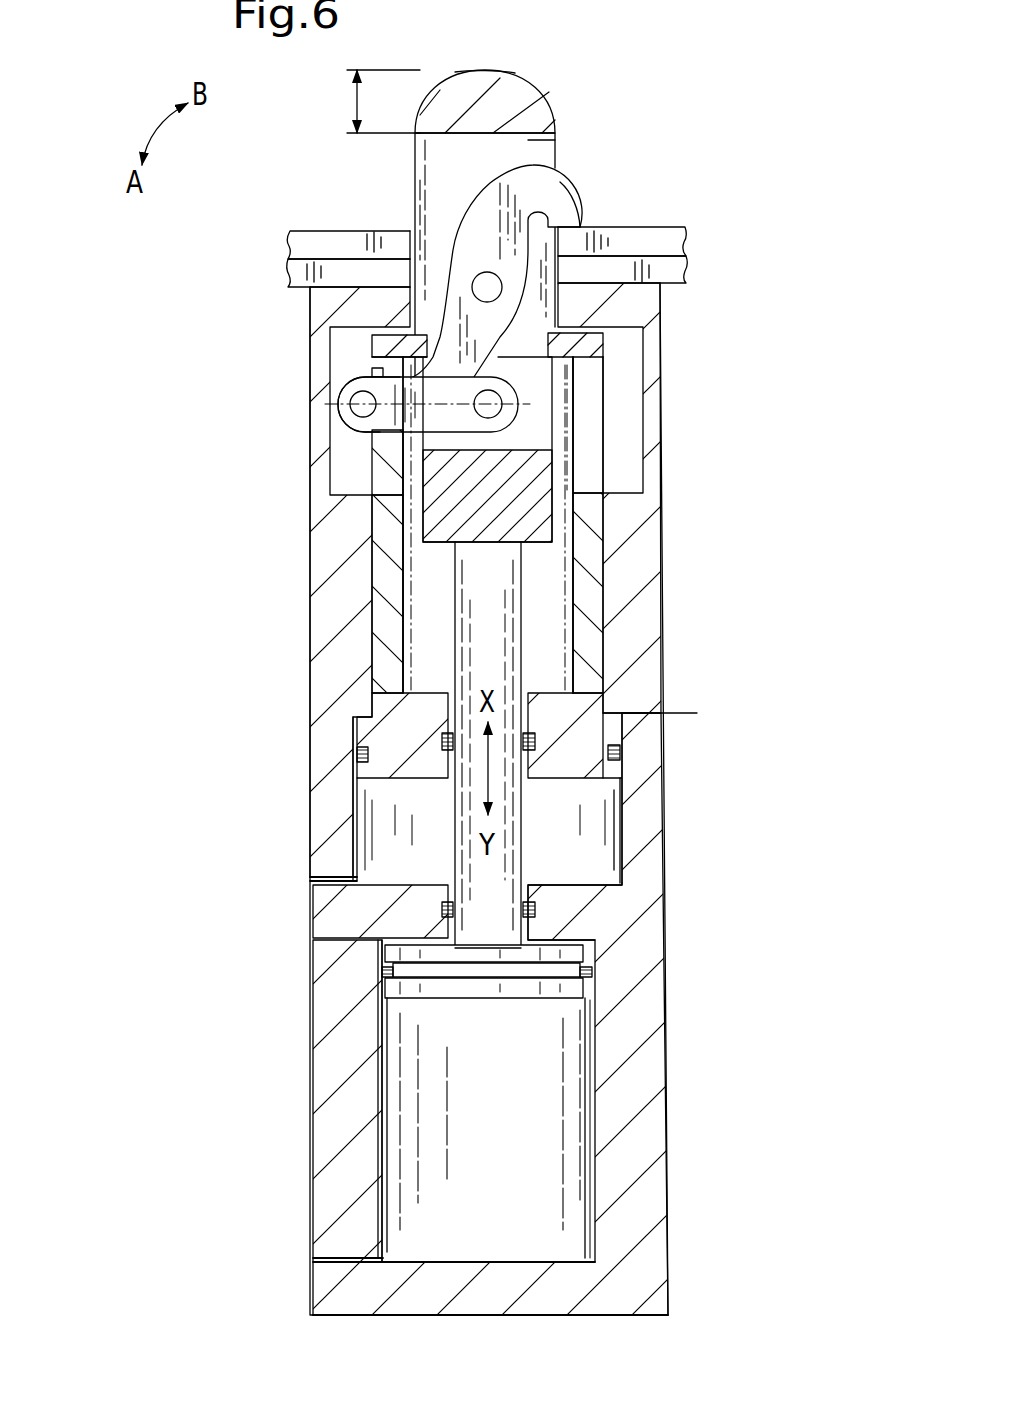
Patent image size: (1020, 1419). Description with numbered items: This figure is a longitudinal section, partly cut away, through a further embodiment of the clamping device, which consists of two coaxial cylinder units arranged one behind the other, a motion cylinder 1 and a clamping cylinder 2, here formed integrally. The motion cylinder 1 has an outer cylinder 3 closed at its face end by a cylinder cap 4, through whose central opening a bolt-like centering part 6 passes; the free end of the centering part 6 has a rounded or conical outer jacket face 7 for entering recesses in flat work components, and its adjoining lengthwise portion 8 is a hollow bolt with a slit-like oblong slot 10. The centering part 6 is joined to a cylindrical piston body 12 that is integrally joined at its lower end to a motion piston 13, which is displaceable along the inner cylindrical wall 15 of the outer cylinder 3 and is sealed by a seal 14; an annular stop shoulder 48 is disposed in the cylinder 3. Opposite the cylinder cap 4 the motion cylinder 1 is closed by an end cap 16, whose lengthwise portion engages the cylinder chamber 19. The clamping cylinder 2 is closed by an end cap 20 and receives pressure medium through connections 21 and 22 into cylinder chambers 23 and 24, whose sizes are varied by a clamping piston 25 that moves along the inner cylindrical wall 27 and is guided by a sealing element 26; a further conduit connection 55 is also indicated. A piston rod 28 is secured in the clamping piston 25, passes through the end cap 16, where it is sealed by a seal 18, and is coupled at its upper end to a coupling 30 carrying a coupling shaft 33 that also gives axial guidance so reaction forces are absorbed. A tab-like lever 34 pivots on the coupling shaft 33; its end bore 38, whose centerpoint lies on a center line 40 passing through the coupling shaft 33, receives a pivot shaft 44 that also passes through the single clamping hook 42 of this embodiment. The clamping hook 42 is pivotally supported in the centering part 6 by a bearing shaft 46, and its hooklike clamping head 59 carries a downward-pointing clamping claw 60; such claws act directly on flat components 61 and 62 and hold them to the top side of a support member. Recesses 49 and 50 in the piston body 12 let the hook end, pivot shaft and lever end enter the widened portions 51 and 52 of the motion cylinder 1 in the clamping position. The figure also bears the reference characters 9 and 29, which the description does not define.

The motion cylinder 1 is at (688, 620).
The clamping cylinder 2 is at (280, 1187).
The outer cylinder 3 is at (323, 630).
The cylinder cap 4 is at (638, 300).
The centering part 6 is at (543, 105).
The outer jacket face 7 is at (527, 82).
The lengthwise portion 8 is at (560, 140).
The stroke 9 is at (375, 101).
The oblong slot 10 is at (542, 153).
The piston body 12 is at (383, 667).
The motion piston 13 is at (602, 770).
The seal 14 is at (356, 754).
The inner cylindrical wall 15 is at (370, 828).
The end cap 16 is at (342, 915).
The seal 18 is at (555, 911).
The cylinder chamber 19 is at (585, 853).
The end cap 20 is at (642, 1290).
The conduit connection 21 is at (312, 945).
The conduit connection 22 is at (308, 1262).
The cylinder chamber 23 is at (570, 1112).
The cylinder chamber 24 is at (585, 942).
The clamping piston 25 is at (577, 988).
The sealing element 26 is at (377, 975).
The inner cylindrical wall 27 is at (585, 1160).
The piston rod 28 is at (510, 828).
The sealing ring 29 is at (357, 761).
The coupling 30 is at (540, 508).
The coupling shaft 33 is at (385, 522).
The tab-like lever 34 is at (350, 390).
The bore 38 is at (357, 420).
The center line 40 is at (368, 370).
The clamping hook 42 is at (542, 193).
The pivot shaft 44 is at (358, 410).
The bearing shaft 46 is at (480, 290).
The stop shoulder 48 is at (682, 713).
The recess 49 is at (382, 465).
The recess 50 is at (590, 455).
The widened portion 51 is at (348, 345).
The widened portion 52 is at (623, 345).
The conduit connection 55 is at (312, 883).
The clamping head 59 is at (568, 210).
The clamping claw 60 is at (612, 242).
The flat component 61 is at (307, 243).
The flat component 62 is at (302, 272).